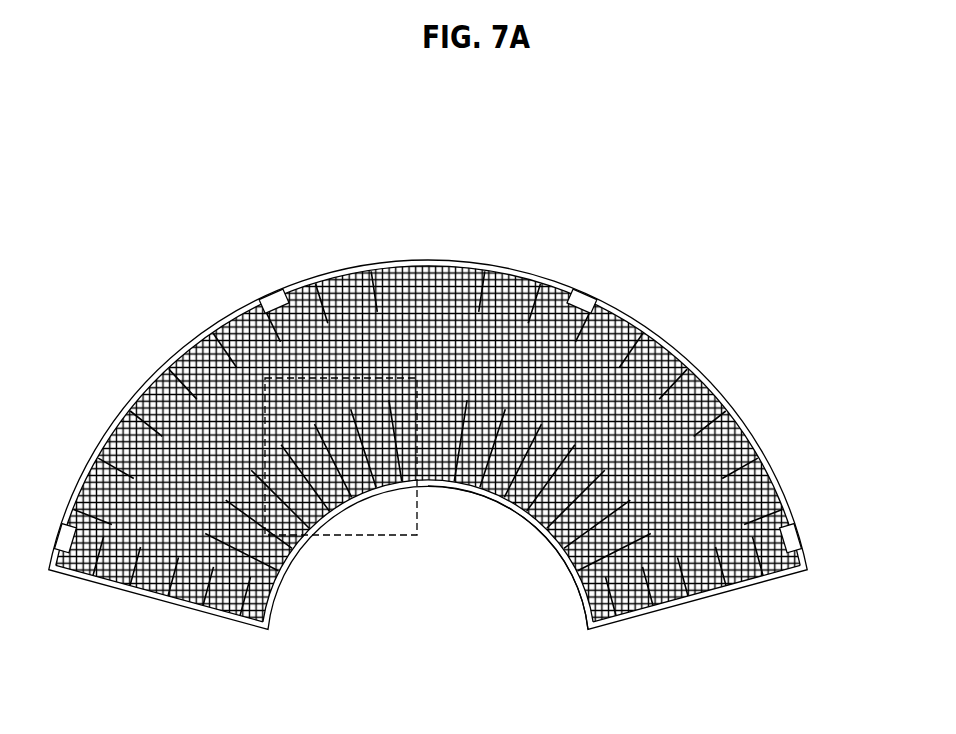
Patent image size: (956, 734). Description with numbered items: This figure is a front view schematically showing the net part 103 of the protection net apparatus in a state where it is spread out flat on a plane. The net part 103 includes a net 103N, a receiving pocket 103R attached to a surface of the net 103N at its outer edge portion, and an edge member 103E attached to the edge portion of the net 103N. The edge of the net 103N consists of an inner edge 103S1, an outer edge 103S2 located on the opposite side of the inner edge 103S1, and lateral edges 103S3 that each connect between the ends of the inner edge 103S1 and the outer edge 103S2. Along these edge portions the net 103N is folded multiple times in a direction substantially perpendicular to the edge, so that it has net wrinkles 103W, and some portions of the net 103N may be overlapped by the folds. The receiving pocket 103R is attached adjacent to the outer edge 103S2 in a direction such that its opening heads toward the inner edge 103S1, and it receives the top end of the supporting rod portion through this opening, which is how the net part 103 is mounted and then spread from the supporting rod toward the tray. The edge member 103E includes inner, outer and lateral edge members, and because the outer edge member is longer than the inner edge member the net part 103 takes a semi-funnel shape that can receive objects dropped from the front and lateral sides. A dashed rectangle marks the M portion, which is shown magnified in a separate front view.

The net part 103 is at (482, 434).
The net 103N is at (778, 483).
The edge member 103E is at (792, 508).
The receiving pocket 103R is at (787, 538).
The inner edge 103S1 is at (448, 491).
The outer edge 103S2 is at (513, 269).
The lateral edge 103S3 is at (702, 599).
The net wrinkle 103W is at (557, 557).
The M portion M is at (362, 540).